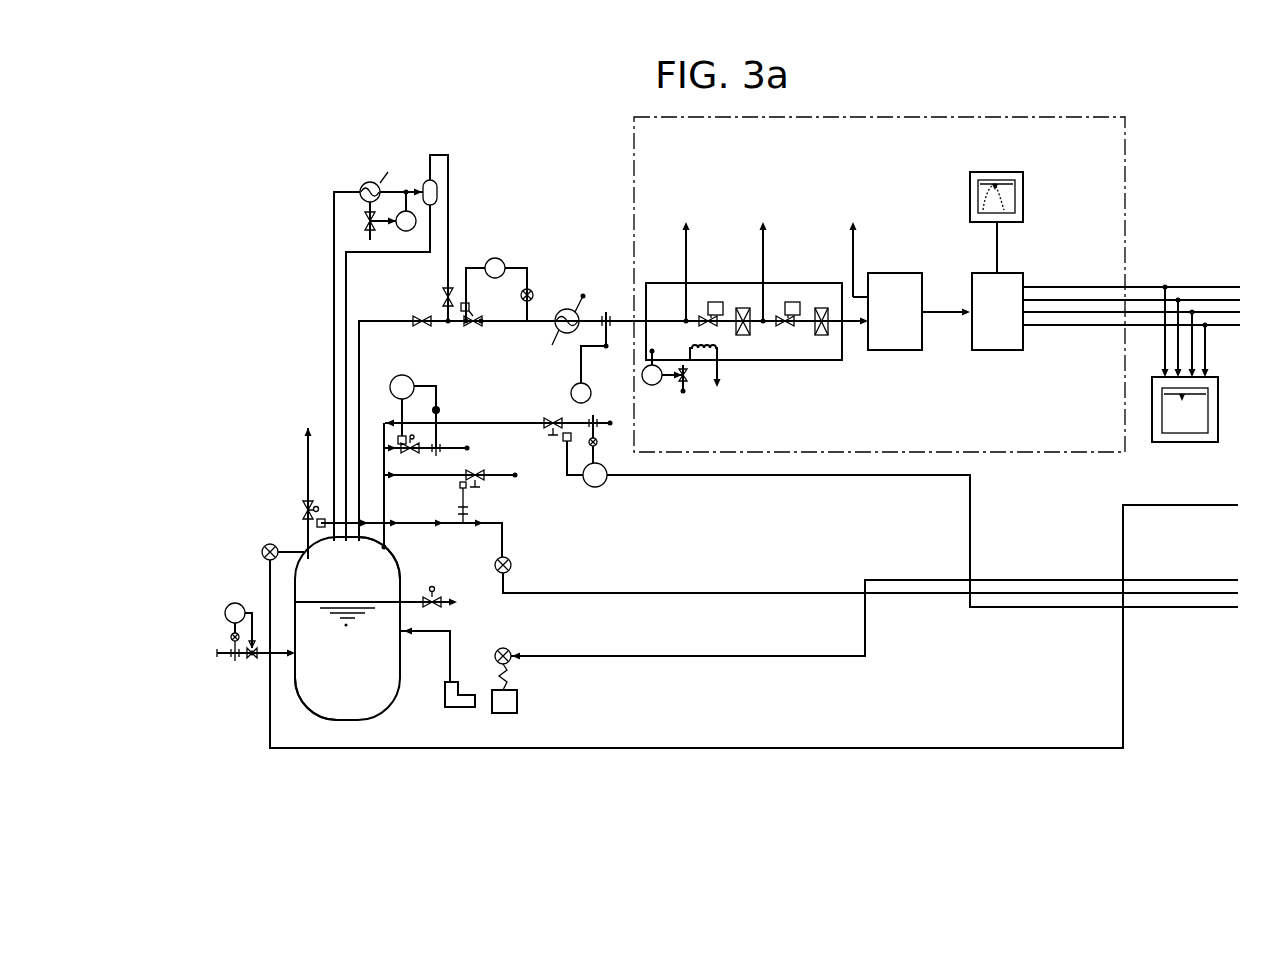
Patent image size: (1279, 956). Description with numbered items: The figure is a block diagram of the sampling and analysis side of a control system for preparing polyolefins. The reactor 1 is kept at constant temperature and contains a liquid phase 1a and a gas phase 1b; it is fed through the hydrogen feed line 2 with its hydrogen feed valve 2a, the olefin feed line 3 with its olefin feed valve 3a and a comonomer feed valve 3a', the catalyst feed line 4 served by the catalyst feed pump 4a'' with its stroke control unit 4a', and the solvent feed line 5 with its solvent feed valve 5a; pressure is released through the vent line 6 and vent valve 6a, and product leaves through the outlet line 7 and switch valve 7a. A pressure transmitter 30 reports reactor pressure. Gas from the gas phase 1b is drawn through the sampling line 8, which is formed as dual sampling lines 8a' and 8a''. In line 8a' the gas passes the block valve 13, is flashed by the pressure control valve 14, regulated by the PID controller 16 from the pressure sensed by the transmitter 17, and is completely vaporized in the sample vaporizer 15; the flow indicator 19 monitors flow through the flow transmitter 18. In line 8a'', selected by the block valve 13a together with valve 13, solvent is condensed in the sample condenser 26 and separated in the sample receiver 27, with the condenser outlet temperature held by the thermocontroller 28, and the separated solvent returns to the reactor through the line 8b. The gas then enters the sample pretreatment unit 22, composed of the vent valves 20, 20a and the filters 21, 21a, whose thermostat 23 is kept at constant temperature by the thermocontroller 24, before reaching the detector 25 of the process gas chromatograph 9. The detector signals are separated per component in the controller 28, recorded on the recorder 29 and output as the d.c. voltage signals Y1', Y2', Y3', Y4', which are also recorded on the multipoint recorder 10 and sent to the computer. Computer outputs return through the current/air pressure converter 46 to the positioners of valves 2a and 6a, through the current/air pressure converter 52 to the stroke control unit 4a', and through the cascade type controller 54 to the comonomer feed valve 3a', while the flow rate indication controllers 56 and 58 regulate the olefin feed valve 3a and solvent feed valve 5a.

The reactor 1 is at (400, 584).
The liquid phase 1a is at (303, 702).
The gas phase 1b is at (392, 574).
The hydrogen feed line 2 is at (405, 478).
The hydrogen feed valve 2a is at (481, 481).
The olefin feed line 3 is at (384, 450).
The olefin feed valve 3a is at (427, 458).
The comonomer feed valve 3a' is at (499, 436).
The catalyst feed line 4 is at (424, 634).
The stroke control unit 4a' is at (529, 716).
The catalyst feed pump 4a'' is at (440, 712).
The solvent feed line 5 is at (221, 660).
The solvent feed valve 5a is at (252, 660).
The vent line 6 is at (307, 456).
The vent valve 6a is at (303, 509).
The outlet line 7 is at (444, 607).
The switch valve 7a is at (435, 587).
The sampling line 8 is at (334, 377).
The sampling line 8a' is at (613, 430).
The sampling line 8a'' is at (308, 316).
The return line 8b is at (346, 296).
The process gas chromatograph 9 is at (1127, 206).
The multipoint recorder 10 is at (1219, 403).
The block valve 13 is at (422, 328).
The block valve 13a is at (444, 297).
The pressure control valve 14 is at (473, 328).
The sample vaporizer 15 is at (556, 330).
The PID controller 16 is at (494, 258).
The transmitter 17 is at (531, 289).
The flow transmitter 18 is at (606, 350).
The flow indicator 19 is at (571, 393).
The vent valve 20 is at (706, 316).
The vent valve 20a is at (783, 316).
The filter 21 is at (748, 335).
The filter 21a is at (814, 335).
The sample pretreatment unit 22 is at (664, 283).
The thermostat 23 is at (745, 364).
The thermocontroller 24 is at (655, 386).
The detector 25 is at (880, 273).
The sample condenser 26 is at (365, 183).
The sample receiver 27 is at (424, 181).
The controller 28 is at (1008, 257).
The recorder 29 is at (1025, 206).
The pressure transmitter 30 is at (262, 552).
The current/air pressure converter 46 is at (514, 562).
The current/air pressure converter 52 is at (507, 648).
The cascade type controller 54 is at (598, 488).
The flow rate indication controller 56 is at (414, 384).
The flow rate indication controller 58 is at (233, 603).
The d.c. voltage signal Y1' is at (1131, 315).
The d.c. voltage signal Y2' is at (1131, 315).
The d.c. voltage signal Y3' is at (1131, 344).
The d.c. voltage signal Y4' is at (1131, 350).